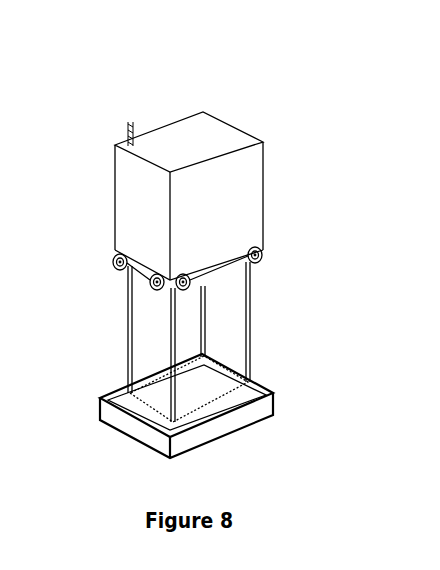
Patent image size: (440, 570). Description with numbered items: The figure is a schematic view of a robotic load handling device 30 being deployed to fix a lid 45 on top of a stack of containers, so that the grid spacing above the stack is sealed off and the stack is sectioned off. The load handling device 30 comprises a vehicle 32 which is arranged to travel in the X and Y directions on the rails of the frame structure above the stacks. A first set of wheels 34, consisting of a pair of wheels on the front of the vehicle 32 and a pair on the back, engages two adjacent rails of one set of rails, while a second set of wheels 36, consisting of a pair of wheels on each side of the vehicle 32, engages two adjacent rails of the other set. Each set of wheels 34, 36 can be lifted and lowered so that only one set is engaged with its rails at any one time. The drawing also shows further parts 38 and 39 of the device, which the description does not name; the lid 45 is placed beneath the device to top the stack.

The load handling device 30 is at (96, 86).
The vehicle 32 is at (228, 188).
The first set of wheels 34 is at (262, 258).
The second set of wheels 36 is at (113, 255).
The support rod 38 is at (250, 323).
The platform 39 is at (227, 385).
The lid 45 is at (273, 408).